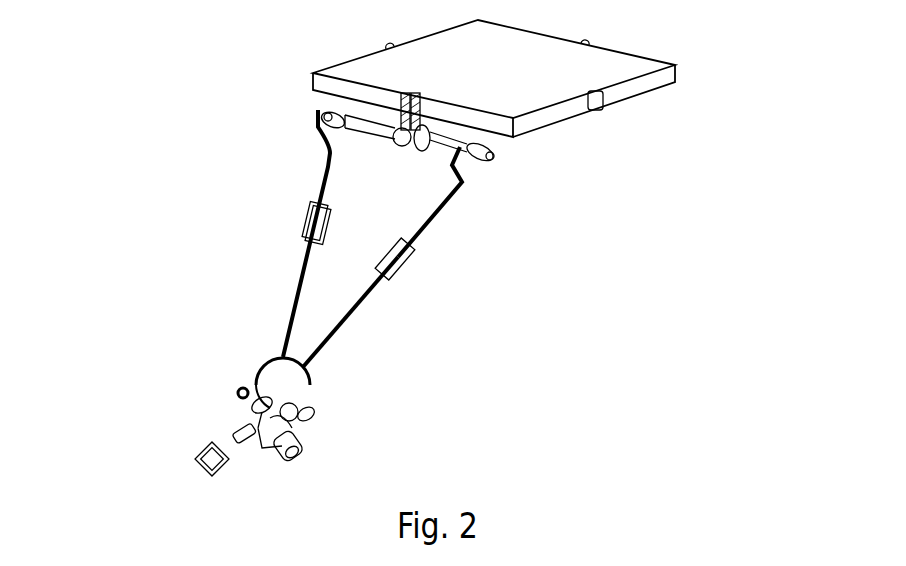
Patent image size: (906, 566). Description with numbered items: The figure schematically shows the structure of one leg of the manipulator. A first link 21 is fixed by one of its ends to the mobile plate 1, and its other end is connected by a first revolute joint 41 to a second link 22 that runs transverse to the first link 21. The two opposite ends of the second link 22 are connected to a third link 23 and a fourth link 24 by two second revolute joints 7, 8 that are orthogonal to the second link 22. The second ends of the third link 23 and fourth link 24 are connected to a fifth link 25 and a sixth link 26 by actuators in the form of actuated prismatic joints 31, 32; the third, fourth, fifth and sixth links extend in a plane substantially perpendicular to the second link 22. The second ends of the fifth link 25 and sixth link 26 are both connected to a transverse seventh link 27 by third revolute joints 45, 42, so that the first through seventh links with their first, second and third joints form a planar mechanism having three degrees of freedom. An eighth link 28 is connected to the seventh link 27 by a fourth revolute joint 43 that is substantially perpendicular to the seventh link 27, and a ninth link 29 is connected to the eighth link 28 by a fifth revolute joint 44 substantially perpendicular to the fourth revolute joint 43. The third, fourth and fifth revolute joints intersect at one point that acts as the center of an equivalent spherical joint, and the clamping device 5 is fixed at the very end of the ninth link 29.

The mobile plate 1 is at (340, 72).
The first link 21 is at (403, 113).
The second revolute joint 7 is at (333, 123).
The second link 22 is at (396, 130).
The third link 23 is at (337, 150).
The fifth link 25 is at (302, 280).
The actuated prismatic joint 31 is at (305, 228).
The first revolute joint 41 is at (470, 146).
The second revolute joint 8 is at (485, 159).
The fourth link 24 is at (453, 198).
The actuated prismatic joint 32 is at (408, 258).
The sixth link 26 is at (346, 316).
The seventh link 27 is at (302, 400).
The third revolute joint 45 is at (243, 390).
The fifth revolute joint 44 is at (253, 398).
The third revolute joint 42 is at (312, 418).
The fourth revolute joint 43 is at (300, 442).
The eighth link 28 is at (255, 447).
The ninth link 29 is at (236, 434).
The clamping device 5 is at (204, 450).